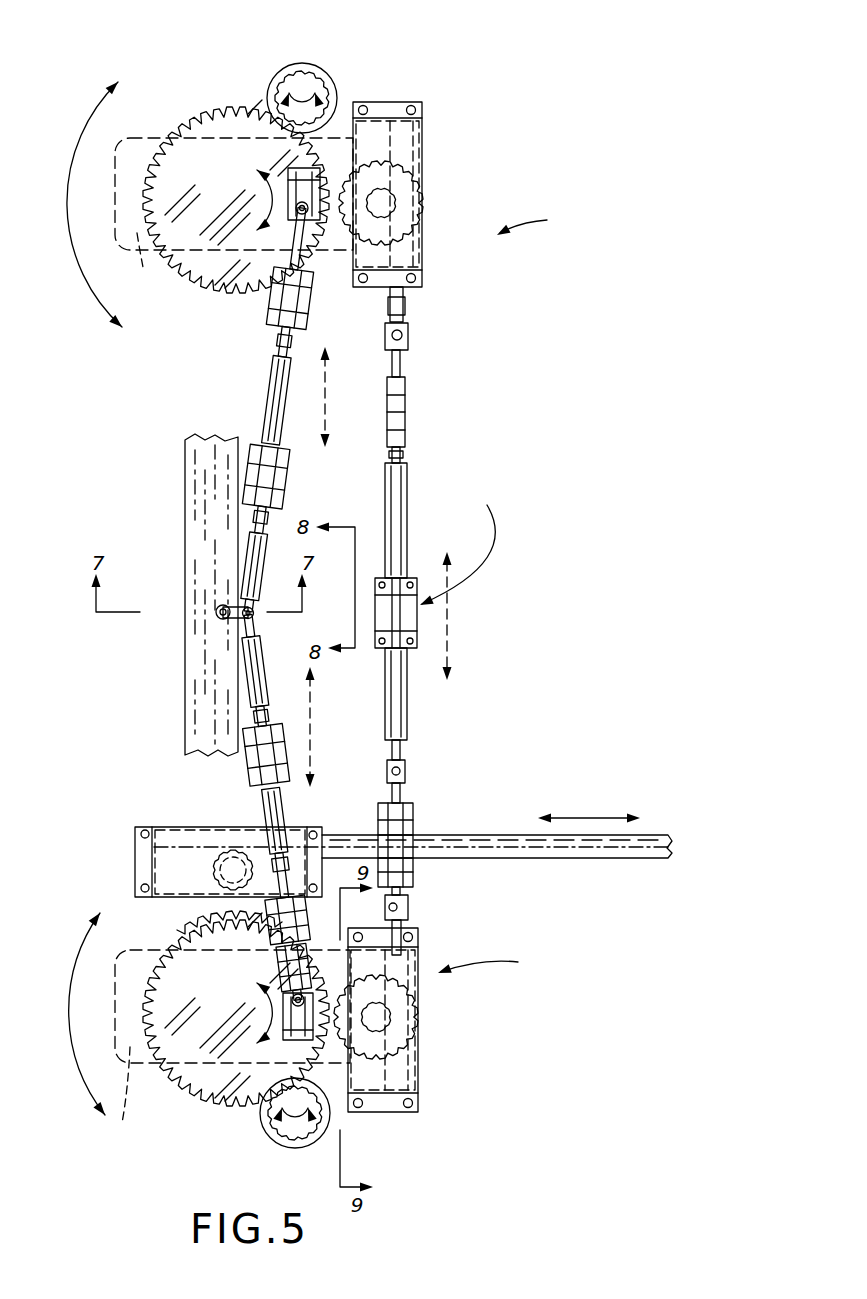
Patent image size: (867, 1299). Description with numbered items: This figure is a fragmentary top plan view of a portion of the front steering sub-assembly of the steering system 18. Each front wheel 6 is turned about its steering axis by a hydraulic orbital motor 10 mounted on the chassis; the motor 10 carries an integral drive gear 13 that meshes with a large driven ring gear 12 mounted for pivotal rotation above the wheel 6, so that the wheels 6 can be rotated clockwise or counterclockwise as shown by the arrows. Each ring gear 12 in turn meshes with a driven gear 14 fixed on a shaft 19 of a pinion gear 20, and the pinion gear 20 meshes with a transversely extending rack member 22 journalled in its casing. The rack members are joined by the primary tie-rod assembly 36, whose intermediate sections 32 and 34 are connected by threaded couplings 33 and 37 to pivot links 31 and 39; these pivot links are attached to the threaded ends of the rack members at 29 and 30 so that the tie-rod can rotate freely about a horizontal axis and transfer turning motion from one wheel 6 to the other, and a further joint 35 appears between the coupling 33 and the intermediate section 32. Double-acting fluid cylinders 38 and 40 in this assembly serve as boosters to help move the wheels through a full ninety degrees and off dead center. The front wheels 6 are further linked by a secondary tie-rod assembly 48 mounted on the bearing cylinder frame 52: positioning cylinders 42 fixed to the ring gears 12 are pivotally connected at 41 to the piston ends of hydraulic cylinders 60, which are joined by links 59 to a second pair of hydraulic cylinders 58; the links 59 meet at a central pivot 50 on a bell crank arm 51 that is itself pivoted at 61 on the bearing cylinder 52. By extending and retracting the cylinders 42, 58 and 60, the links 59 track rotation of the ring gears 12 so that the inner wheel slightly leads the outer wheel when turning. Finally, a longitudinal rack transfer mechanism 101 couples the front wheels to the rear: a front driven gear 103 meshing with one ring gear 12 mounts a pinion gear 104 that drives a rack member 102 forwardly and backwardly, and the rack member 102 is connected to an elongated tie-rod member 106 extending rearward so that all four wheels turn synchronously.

The front wheels 6 is at (231, 642).
The hydraulic orbital motor 10 is at (315, 63).
The ring gear 12 is at (223, 127).
The drive gear 13 is at (293, 80).
The driven gear 14 is at (423, 198).
The steering system 18 is at (548, 231).
The shaft 19 is at (388, 102).
The pinion gear 20 is at (423, 223).
The rack member 22 is at (407, 140).
The threaded end of rack member 29 is at (403, 302).
The threaded end of rack member 30 is at (400, 955).
The pivot link 31 is at (407, 328).
The intermediate section 32 is at (397, 517).
The threaded coupling 33 is at (405, 385).
The intermediate section 34 is at (403, 693).
The joint 35 is at (405, 455).
The primary tie-rod assembly 36 is at (457, 544).
The threaded coupling 37 is at (403, 763).
The double-acting fluid cylinder 38 is at (410, 868).
The pivot link 39 is at (405, 907).
The double-acting fluid cylinder 40 is at (410, 580).
The pivotal connection 41 is at (310, 218).
The positioning cylinder 42 is at (288, 215).
The secondary tie-rod assembly 48 is at (266, 391).
The pivot pin 50 is at (246, 618).
The bell crank arm 51 is at (240, 609).
The bearing cylinder frame 52 is at (195, 452).
The double acting hydraulic cylinder 58 is at (262, 495).
The link 59 is at (275, 418).
The double acting hydraulic cylinder 60 is at (313, 290).
The pivotal connection 61 is at (216, 612).
The longitudinal rack transfer mechanism 101 is at (128, 837).
The rack member 102 is at (178, 837).
The front driven gear 103 is at (220, 903).
The pinion gear 104 is at (232, 870).
The elongated tie-rod member 106 is at (552, 847).